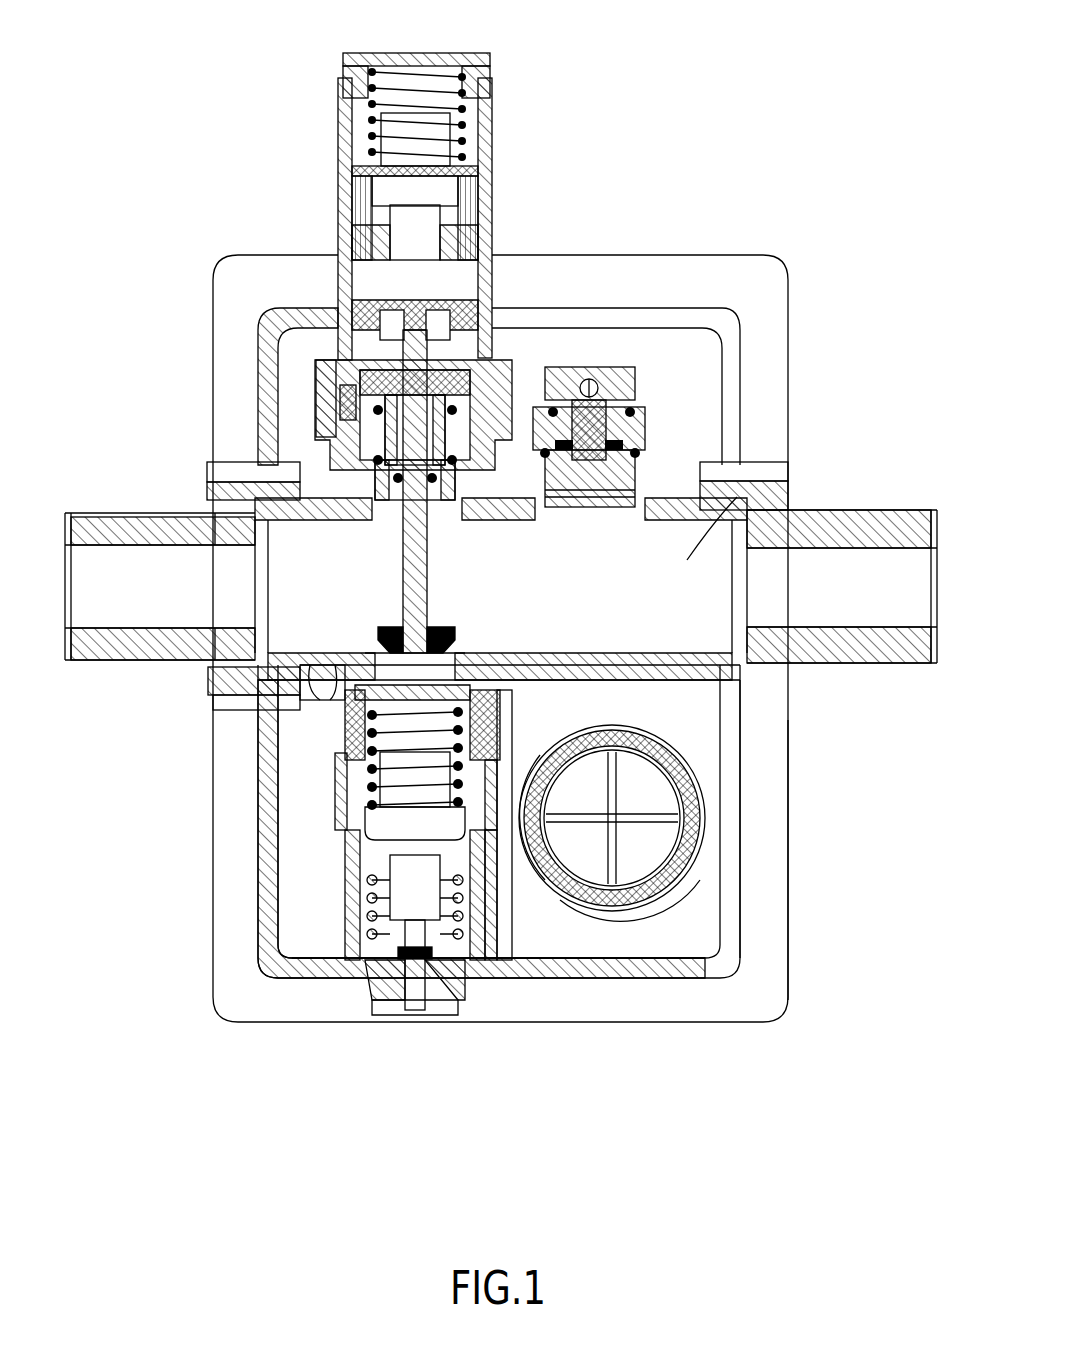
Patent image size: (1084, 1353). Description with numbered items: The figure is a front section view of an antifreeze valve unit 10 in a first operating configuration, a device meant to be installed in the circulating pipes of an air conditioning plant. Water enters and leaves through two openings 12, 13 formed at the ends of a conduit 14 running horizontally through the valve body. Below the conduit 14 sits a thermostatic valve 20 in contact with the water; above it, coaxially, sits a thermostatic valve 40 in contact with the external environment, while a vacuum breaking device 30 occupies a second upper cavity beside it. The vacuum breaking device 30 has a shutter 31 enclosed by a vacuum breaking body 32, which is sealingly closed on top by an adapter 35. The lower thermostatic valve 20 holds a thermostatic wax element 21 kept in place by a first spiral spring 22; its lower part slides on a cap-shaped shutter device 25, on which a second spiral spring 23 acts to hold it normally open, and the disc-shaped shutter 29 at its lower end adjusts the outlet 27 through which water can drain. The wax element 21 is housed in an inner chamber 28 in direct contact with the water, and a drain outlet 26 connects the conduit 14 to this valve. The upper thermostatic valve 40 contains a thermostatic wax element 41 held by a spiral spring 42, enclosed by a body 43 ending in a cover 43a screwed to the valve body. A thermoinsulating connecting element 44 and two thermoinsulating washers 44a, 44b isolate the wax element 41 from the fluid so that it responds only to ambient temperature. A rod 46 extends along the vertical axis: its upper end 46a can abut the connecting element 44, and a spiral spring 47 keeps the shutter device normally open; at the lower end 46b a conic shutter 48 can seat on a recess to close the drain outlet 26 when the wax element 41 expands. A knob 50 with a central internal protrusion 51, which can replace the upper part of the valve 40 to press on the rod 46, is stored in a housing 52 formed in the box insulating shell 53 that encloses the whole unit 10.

The antifreeze valve unit 10 is at (774, 57).
The opening 12 is at (250, 575).
The opening 13 is at (752, 600).
The conduit 14 is at (768, 480).
The thermostatic valve 20 is at (318, 945).
The thermostatic wax element 21 is at (395, 795).
The first spiral spring 22 is at (345, 775).
The second spiral spring 23 is at (355, 905).
The cap-shaped shutter device 25 is at (370, 880).
The drain outlet 26 is at (382, 740).
The outlet 27 is at (416, 1022).
The inner chamber 28 is at (483, 1012).
The disc-shaped shutter 29 is at (378, 1010).
The vacuum breaking device 30 is at (696, 350).
The shutter 31 is at (635, 385).
The vacuum breaking body 32 is at (640, 420).
The adapter 35 is at (650, 378).
The thermostatic valve 40 is at (320, 135).
The thermostatic wax element 41 is at (440, 145).
The spiral spring 42 is at (408, 90).
The body 43 is at (338, 250).
The cover 43a is at (330, 372).
The connecting element 44 is at (470, 340).
The thermoinsulating washer 44a is at (470, 385).
The thermoinsulating washer 44b is at (470, 400).
The rod 46 is at (275, 485).
The upper end 46a is at (350, 352).
The lower end 46b is at (305, 700).
The spiral spring 47 is at (345, 398).
The conic shutter 48 is at (213, 666).
The knob 50 is at (706, 750).
The central internal protrusion 51 is at (620, 818).
The housing 52 is at (590, 912).
The box insulating shell 53 is at (763, 910).